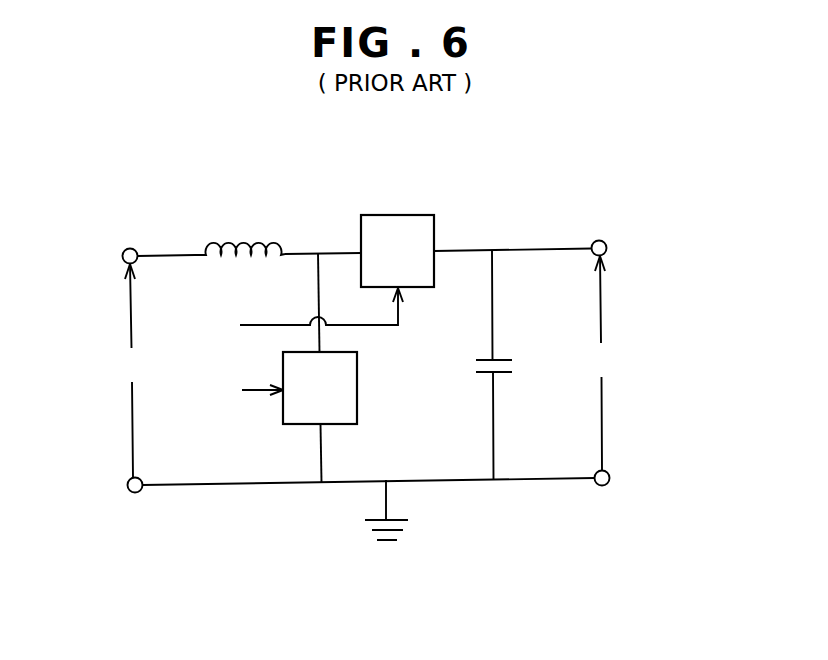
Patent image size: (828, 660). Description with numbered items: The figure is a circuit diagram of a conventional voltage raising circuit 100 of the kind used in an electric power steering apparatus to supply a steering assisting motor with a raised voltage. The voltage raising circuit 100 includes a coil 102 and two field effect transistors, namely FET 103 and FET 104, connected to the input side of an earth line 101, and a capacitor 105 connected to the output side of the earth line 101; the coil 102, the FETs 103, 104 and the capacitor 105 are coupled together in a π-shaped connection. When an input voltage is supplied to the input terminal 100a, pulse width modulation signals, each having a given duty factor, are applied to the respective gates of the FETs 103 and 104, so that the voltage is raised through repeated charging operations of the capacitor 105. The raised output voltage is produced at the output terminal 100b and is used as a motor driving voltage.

The voltage raising circuit 100 is at (500, 190).
The input terminal 100a is at (130, 248).
The output terminal 100b is at (602, 240).
The earth line 101 is at (275, 485).
The coil 102 is at (247, 240).
The FET 103 is at (357, 408).
The FET 104 is at (400, 215).
The capacitor 105 is at (514, 370).